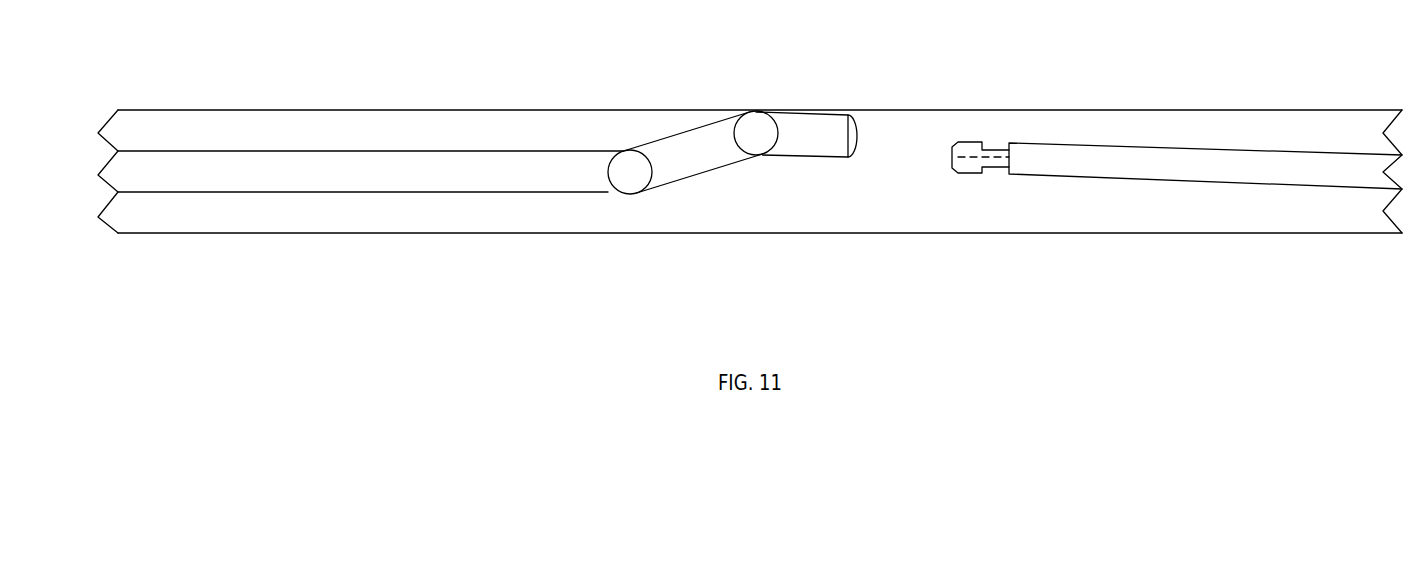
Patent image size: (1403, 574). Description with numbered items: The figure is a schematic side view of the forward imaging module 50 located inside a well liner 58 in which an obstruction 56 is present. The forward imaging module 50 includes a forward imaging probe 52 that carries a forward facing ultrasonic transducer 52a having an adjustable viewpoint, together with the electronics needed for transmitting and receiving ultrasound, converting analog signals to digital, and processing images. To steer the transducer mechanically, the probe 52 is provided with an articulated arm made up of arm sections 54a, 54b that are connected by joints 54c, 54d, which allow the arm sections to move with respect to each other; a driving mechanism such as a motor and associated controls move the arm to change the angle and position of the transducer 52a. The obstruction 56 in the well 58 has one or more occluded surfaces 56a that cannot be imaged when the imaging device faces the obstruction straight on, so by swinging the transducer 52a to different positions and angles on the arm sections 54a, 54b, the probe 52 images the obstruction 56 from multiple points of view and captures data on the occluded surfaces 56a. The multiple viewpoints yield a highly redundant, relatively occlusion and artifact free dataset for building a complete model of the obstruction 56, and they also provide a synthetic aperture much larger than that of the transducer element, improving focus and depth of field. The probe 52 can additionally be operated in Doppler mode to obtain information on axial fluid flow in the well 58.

The forward imaging module 50 is at (584, 131).
The forward imaging probe 52 is at (740, 154).
The forward facing ultrasonic transducer 52a is at (857, 130).
The arm section 54a is at (662, 163).
The arm section 54b is at (830, 155).
The joint 54c is at (623, 175).
The joint 54d is at (755, 127).
The obstruction 56 is at (1177, 166).
The occluded surface 56a is at (975, 142).
The well liner 58 is at (907, 233).